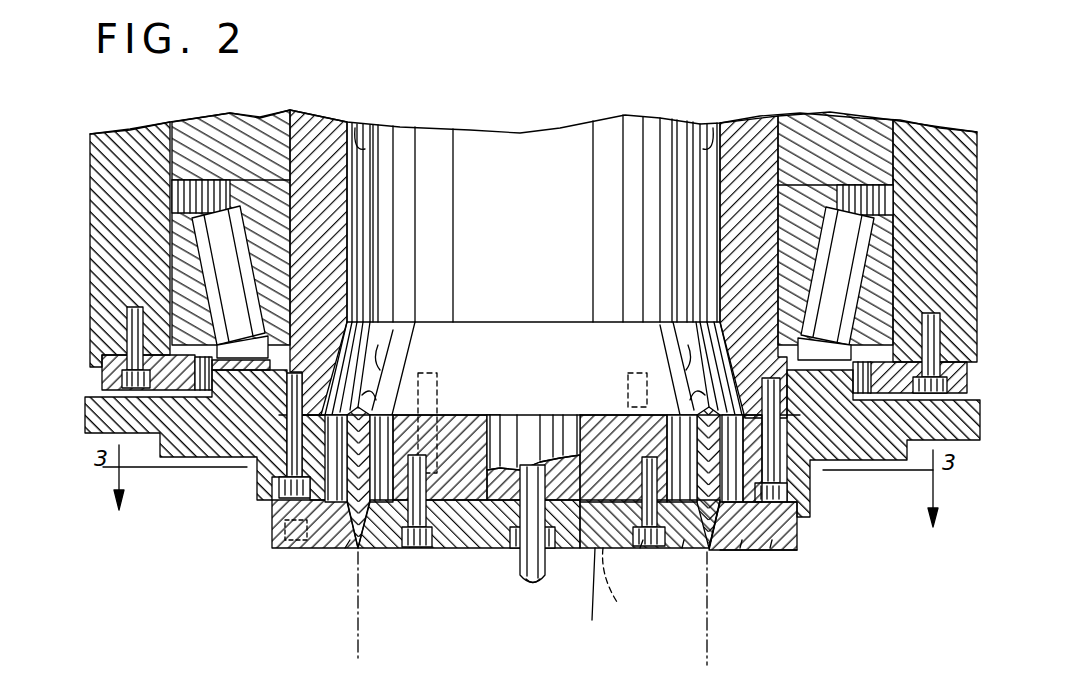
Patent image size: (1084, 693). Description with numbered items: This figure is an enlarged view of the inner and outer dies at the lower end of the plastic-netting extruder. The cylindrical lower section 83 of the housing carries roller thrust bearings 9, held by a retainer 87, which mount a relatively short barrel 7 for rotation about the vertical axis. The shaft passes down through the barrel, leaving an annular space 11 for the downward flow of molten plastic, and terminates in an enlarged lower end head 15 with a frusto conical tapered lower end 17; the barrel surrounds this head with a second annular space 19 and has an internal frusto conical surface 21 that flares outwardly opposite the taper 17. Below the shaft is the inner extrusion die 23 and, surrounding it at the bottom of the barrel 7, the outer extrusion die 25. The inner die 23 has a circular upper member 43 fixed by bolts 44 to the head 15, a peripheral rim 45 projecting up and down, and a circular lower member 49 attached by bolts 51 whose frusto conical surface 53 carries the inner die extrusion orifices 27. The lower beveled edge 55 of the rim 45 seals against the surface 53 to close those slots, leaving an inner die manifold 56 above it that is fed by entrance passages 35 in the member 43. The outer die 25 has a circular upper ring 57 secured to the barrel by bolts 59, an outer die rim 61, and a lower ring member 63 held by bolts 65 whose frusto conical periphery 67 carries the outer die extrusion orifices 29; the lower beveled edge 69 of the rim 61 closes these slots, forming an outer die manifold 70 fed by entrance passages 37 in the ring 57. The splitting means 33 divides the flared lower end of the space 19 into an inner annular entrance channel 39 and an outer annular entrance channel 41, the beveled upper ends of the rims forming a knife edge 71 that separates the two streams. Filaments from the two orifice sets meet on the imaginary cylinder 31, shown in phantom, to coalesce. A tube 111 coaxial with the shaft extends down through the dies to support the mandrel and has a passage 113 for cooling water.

The barrel 7 is at (310, 140).
The roller thrust bearings 9 is at (235, 228).
The annular space 11 is at (363, 147).
The lower end head 15 is at (545, 200).
The tapered lower end 17 is at (355, 375).
The second annular space 19 is at (353, 333).
The internal frusto conical surface 21 is at (357, 353).
The inner extrusion die 23 is at (458, 556).
The outer extrusion die 25 is at (266, 549).
The inner die extrusion orifices 27 is at (365, 549).
The outer die extrusion orifices 29 is at (330, 545).
The imaginary cylinder 31 is at (355, 626).
The splitting means 33 is at (405, 382).
The inner die entrance passages 35 is at (392, 433).
The outer die entrance passages 37 is at (335, 432).
The inner annular entrance channel 39 is at (400, 410).
The outer annular entrance channel 41 is at (330, 400).
The circular upper member 43 is at (589, 596).
The bolts 44 is at (621, 582).
The inner die rim 45 is at (700, 463).
The circular lower member 49 is at (510, 550).
The bolts 51 is at (645, 550).
The inner die frusto conical surface 53 is at (393, 550).
The lower beveled edge 55 is at (682, 551).
The inner die manifold 56 is at (640, 551).
The circular upper ring 57 is at (897, 465).
The bolts 59 is at (783, 442).
The outer die rim 61 is at (740, 553).
The lower ring member 63 is at (800, 545).
The bolts 65 is at (792, 552).
The outer die frusto conical periphery 67 is at (725, 550).
The lower beveled edge 69 is at (345, 549).
The outer die manifold 70 is at (768, 551).
The knife edge 71 is at (375, 400).
The cylindrical lower section 83 is at (130, 165).
The retainer 87 is at (100, 380).
The tube 111 is at (517, 570).
The passage 113 is at (525, 590).